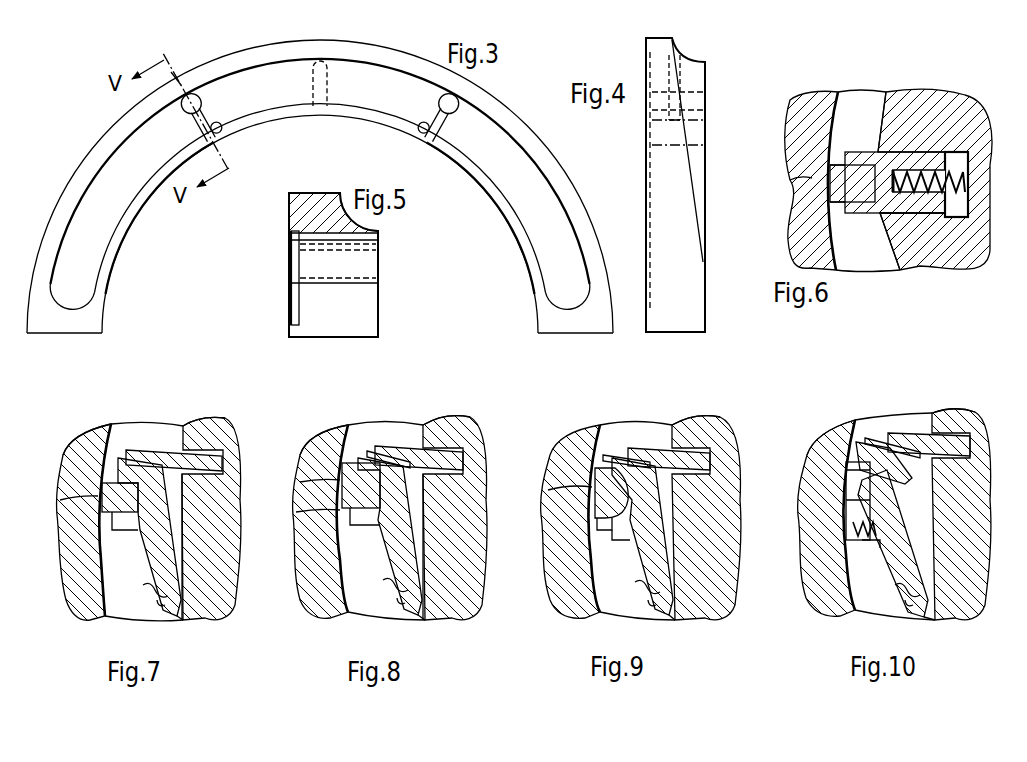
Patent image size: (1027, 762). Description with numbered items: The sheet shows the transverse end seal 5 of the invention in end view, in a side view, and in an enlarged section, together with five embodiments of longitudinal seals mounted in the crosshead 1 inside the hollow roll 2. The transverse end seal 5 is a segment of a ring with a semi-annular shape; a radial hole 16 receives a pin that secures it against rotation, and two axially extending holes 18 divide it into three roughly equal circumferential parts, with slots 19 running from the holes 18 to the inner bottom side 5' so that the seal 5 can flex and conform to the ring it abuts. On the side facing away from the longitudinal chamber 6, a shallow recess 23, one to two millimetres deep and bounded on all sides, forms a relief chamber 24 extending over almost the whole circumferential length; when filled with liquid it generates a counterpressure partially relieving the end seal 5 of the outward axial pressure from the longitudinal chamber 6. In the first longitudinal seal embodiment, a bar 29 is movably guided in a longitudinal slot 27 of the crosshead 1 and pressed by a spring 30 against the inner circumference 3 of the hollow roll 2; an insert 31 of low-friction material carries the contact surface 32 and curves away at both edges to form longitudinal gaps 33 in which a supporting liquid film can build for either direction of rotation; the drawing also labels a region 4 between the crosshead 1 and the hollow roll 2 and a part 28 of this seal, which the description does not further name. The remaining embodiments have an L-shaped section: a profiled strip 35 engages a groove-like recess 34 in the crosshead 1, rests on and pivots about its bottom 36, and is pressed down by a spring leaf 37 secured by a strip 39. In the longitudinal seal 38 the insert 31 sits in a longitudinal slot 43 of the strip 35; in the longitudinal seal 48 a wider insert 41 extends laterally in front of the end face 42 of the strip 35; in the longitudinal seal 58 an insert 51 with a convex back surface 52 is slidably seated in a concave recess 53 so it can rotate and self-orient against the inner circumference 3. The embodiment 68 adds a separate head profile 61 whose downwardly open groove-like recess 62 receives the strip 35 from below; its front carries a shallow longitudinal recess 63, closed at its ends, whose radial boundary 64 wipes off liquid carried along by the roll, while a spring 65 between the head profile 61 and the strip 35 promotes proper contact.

In FIG. 6, the crosshead 1 is at (938, 110).
In FIG. 7, the crosshead 1 is at (216, 538).
In FIG. 8, the crosshead 1 is at (468, 542).
In FIG. 9, the crosshead 1 is at (726, 508).
In FIG. 10, the crosshead 1 is at (981, 495).
In FIG. 6, the hollow roll 2 is at (811, 108).
In FIG. 7, the hollow roll 2 is at (63, 553).
In FIG. 9, the hollow roll 2 is at (568, 446).
In FIG. 10, the hollow roll 2 is at (816, 528).
In FIG. 6, the inner circumference 3 is at (843, 100).
In FIG. 7, the inner circumference 3 is at (108, 618).
In FIG. 8, the inner circumference 3 is at (350, 617).
In FIG. 9, the inner circumference 3 is at (604, 618).
In FIG. 10, the inner circumference 3 is at (860, 616).
In FIG. 6, the gap 4 is at (866, 236).
In FIG. 7, the gap 4 is at (136, 607).
In FIG. 8, the gap 4 is at (379, 607).
In FIG. 3, the transverse end seal 5 is at (320, 186).
In FIG. 5, the transverse end seal 5 is at (351, 265).
In FIG. 3, the inner bottom side 5' is at (320, 224).
In FIG. 6, the longitudinal chamber 6 is at (874, 102).
In FIG. 7, the longitudinal chamber 6 is at (148, 431).
In FIG. 8, the longitudinal chamber 6 is at (349, 428).
In FIG. 9, the longitudinal chamber 6 is at (601, 428).
In FIG. 10, the longitudinal chamber 6 is at (857, 426).
In FIG. 3, the radial hole 16 is at (332, 80).
In FIG. 4, the radial hole 16 is at (683, 78).
In FIG. 3, the axially extending holes 18 is at (192, 100).
In FIG. 5, the axially extending holes 18 is at (366, 263).
In FIG. 4, the axially extending holes 18 is at (696, 103).
In FIG. 3, the slots 19 is at (222, 136).
In FIG. 5, the slots 19 is at (366, 329).
In FIG. 4, the slots 19 is at (696, 134).
In FIG. 3, the shallow recess 23 is at (73, 286).
In FIG. 5, the shallow recess 23 is at (289, 305).
In FIG. 3, the relief chamber 24 is at (138, 184).
In FIG. 5, the relief chamber 24 is at (290, 255).
In FIG. 4, the relief chamber 24 is at (648, 176).
In FIG. 6, the longitudinal slot 27 is at (950, 218).
In FIG. 6, the slide 28 is at (869, 142).
In FIG. 6, the bar 29 is at (904, 215).
In FIG. 6, the spring 30 is at (958, 166).
In FIG. 6, the insert 31 is at (892, 258).
In FIG. 7, the insert 31 is at (70, 457).
In FIG. 6, the contact surface 32 is at (789, 178).
In FIG. 7, the contact surface 32 is at (98, 496).
In FIG. 8, the contact surface 32 is at (340, 480).
In FIG. 9, the contact surface 32 is at (591, 487).
In FIG. 6, the longitudinal gaps 33 is at (834, 162).
In FIG. 7, the longitudinal gaps 33 is at (107, 472).
In FIG. 10, the longitudinal gaps 33 is at (860, 432).
In FIG. 7, the groove-like recess 34 is at (150, 590).
In FIG. 8, the groove-like recess 34 is at (390, 588).
In FIG. 9, the groove-like recess 34 is at (642, 590).
In FIG. 10, the groove-like recess 34 is at (900, 592).
In FIG. 7, the profiled strip 35 is at (146, 541).
In FIG. 8, the profiled strip 35 is at (388, 541).
In FIG. 9, the profiled strip 35 is at (642, 560).
In FIG. 10, the profiled strip 35 is at (871, 546).
In FIG. 7, the bottom 36 is at (176, 621).
In FIG. 8, the bottom 36 is at (419, 621).
In FIG. 9, the bottom 36 is at (668, 621).
In FIG. 10, the bottom 36 is at (930, 621).
In FIG. 7, the spring leaf 37 is at (173, 462).
In FIG. 8, the spring leaf 37 is at (414, 462).
In FIG. 9, the spring leaf 37 is at (661, 462).
In FIG. 10, the spring leaf 37 is at (915, 458).
In FIG. 7, the longitudinal seal 38 is at (130, 449).
In FIG. 7, the strip 39 is at (211, 440).
In FIG. 8, the strip 39 is at (462, 440).
In FIG. 9, the strip 39 is at (702, 440).
In FIG. 10, the strip 39 is at (951, 430).
In FIG. 8, the insert 41 is at (340, 509).
In FIG. 8, the end face 42 is at (314, 431).
In FIG. 6, the longitudinal slot 43 is at (880, 152).
In FIG. 7, the longitudinal slot 43 is at (190, 506).
In FIG. 8, the longitudinal slot 43 is at (431, 506).
In FIG. 8, the longitudinal seal 48 is at (373, 449).
In FIG. 9, the insert 51 is at (592, 513).
In FIG. 9, the back surface 52 is at (597, 528).
In FIG. 9, the recess 53 is at (614, 540).
In FIG. 9, the longitudinal seal 58 is at (622, 449).
In FIG. 10, the head profile 61 is at (840, 440).
In FIG. 10, the groove-like recess 62 is at (902, 500).
In FIG. 10, the longitudinal recess 63 is at (845, 478).
In FIG. 10, the radial boundary 64 is at (845, 463).
In FIG. 10, the spring 65 is at (855, 530).
In FIG. 10, the embodiment 68 is at (880, 436).